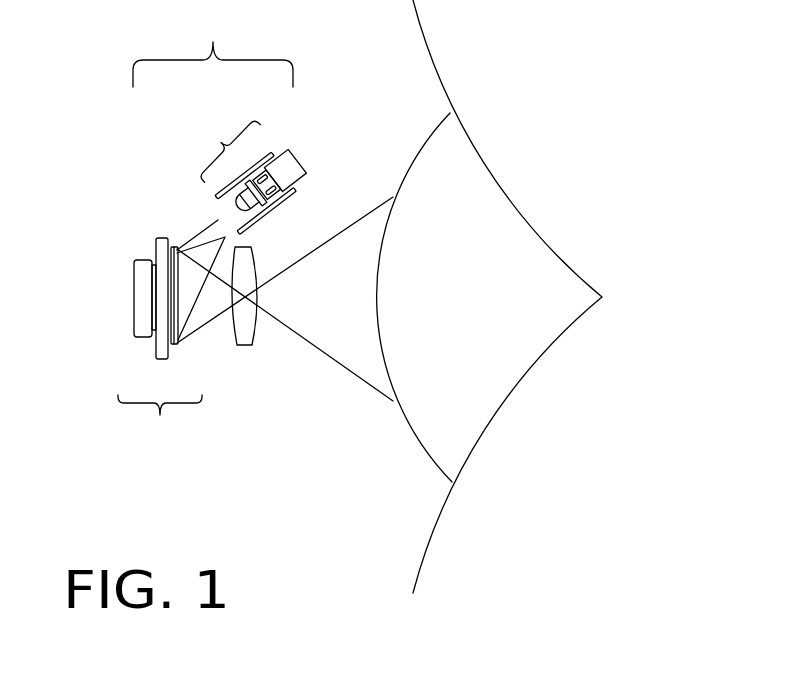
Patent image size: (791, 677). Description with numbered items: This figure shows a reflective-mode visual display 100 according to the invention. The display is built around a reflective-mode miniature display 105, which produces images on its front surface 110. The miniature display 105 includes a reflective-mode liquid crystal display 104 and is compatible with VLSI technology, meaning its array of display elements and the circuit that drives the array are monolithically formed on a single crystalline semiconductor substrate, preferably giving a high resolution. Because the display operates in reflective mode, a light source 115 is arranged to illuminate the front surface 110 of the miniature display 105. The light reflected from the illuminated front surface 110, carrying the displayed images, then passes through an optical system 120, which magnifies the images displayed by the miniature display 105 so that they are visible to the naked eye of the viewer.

The visual display 100 is at (214, 232).
The reflective-mode miniature display 105 is at (176, 322).
The reflective-mode liquid crystal display 104 is at (159, 246).
The front surface 110 is at (184, 345).
The light source 115 is at (251, 171).
The optical system 120 is at (256, 344).